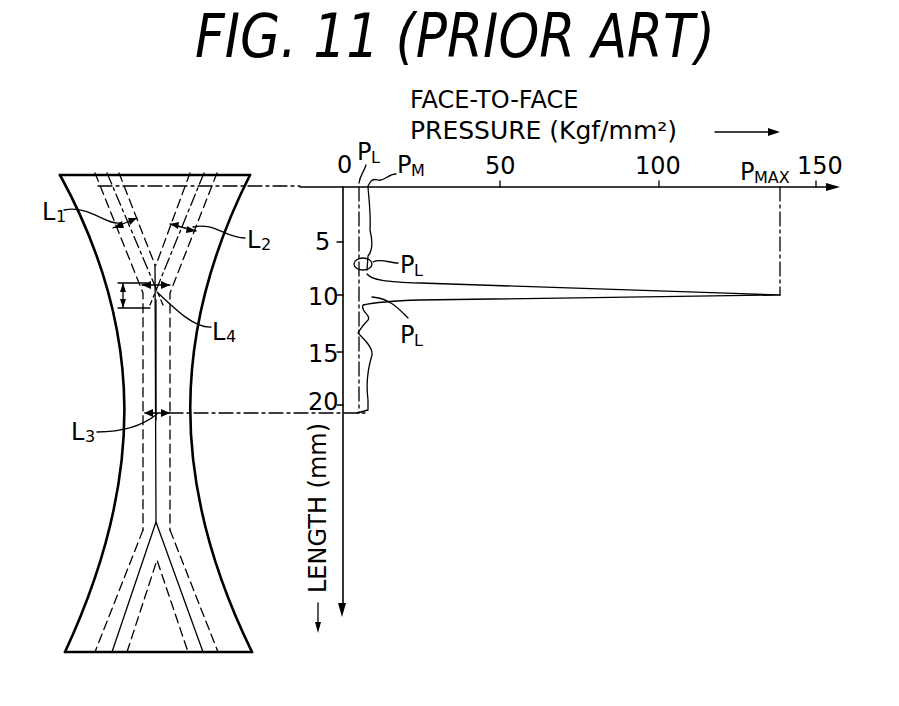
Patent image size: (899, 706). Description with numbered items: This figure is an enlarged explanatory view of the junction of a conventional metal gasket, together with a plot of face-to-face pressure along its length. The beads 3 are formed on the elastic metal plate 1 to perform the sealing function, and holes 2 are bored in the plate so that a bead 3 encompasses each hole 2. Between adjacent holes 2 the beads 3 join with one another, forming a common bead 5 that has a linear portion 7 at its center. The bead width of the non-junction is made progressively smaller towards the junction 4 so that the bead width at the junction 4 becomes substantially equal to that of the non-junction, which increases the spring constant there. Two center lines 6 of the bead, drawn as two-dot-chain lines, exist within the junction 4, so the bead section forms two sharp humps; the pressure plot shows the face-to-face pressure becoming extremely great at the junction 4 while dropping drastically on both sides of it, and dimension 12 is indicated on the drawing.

The elastic metal plate 1 is at (74, 266).
The hole 2 is at (121, 476).
The bead 3 is at (110, 635).
The junction 4 is at (160, 275).
The common bead 5 is at (143, 391).
The center lines of the bead 6 is at (137, 587).
The linear portion 7 is at (157, 360).
The offset dimension 12 is at (117, 292).